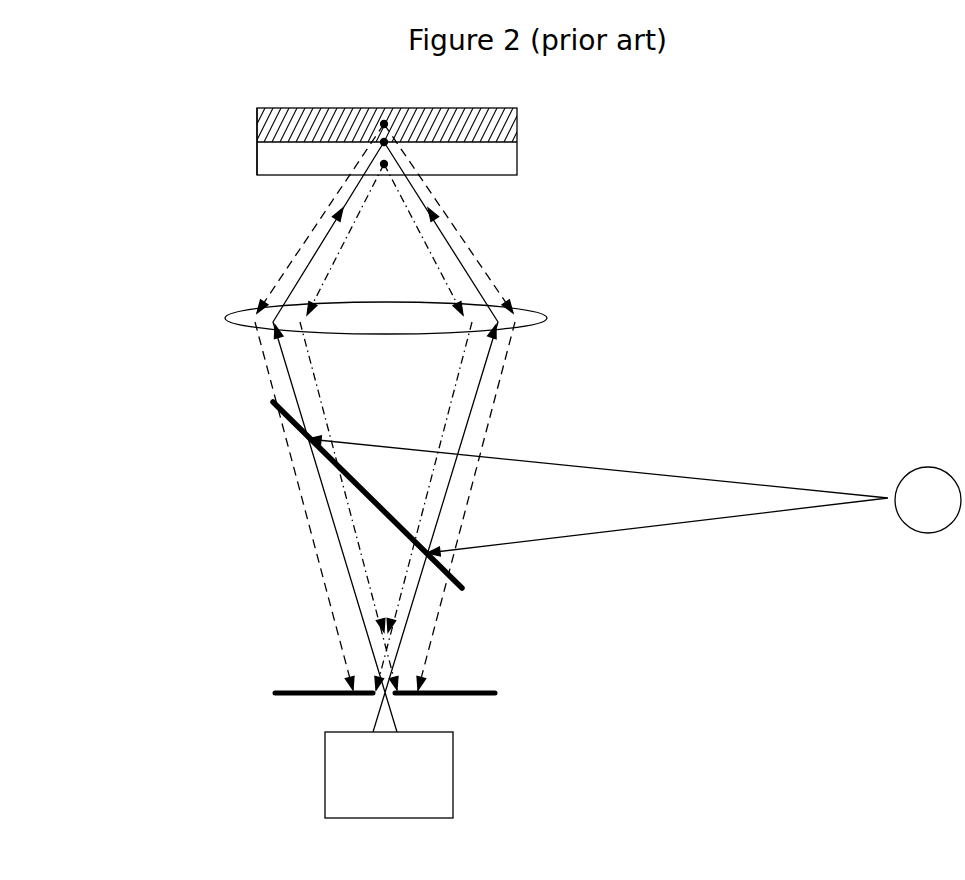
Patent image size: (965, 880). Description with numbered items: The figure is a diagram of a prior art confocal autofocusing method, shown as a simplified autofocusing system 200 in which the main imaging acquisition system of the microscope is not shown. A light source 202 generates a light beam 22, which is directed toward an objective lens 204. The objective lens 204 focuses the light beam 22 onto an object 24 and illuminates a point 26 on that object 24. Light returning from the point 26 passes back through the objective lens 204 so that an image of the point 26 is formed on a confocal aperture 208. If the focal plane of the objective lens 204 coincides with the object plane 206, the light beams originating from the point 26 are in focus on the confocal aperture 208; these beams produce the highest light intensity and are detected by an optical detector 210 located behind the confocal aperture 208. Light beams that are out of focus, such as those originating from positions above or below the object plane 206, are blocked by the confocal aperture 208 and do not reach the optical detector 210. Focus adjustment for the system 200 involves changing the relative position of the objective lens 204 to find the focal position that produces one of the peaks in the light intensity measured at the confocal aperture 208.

The autofocusing system 200 is at (808, 280).
The object 24 is at (517, 125).
The point 26 is at (387, 143).
The object plane 206 is at (246, 143).
The objective lens 204 is at (331, 310).
The light beam 22 is at (690, 477).
The light source 202 is at (928, 540).
The confocal aperture 208 is at (331, 690).
The optical detector 210 is at (334, 776).